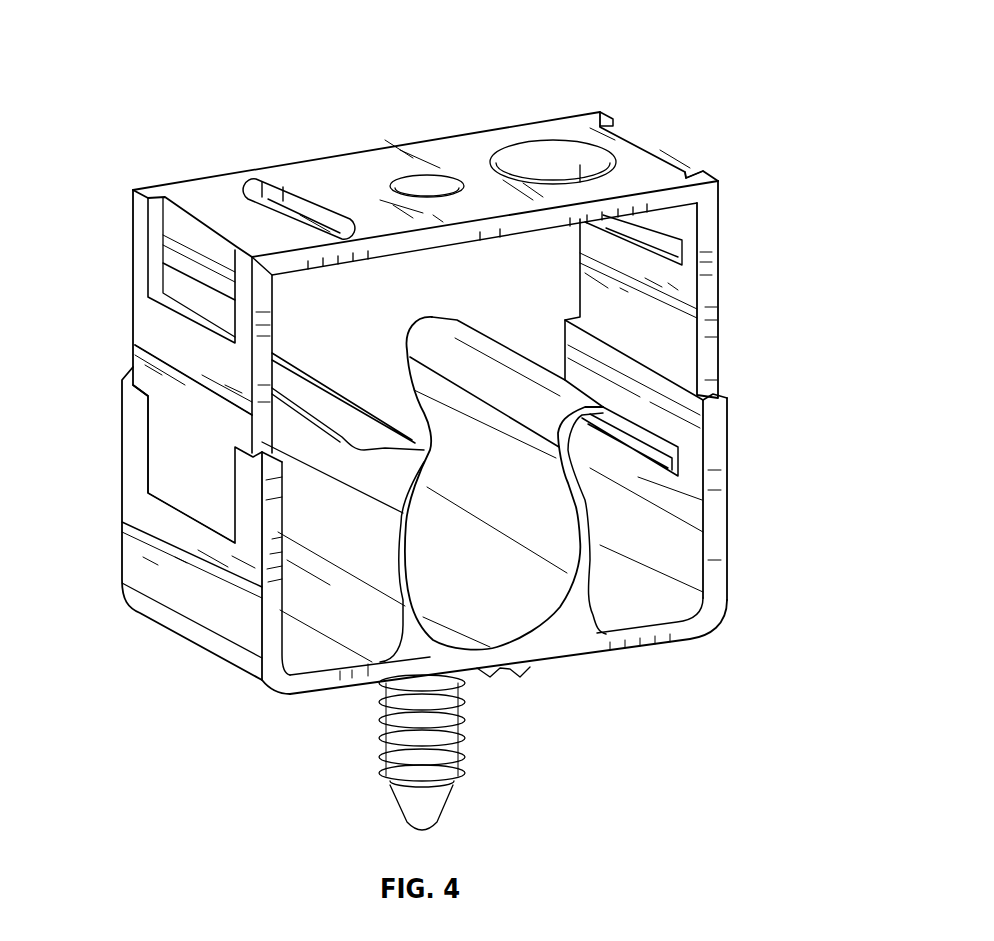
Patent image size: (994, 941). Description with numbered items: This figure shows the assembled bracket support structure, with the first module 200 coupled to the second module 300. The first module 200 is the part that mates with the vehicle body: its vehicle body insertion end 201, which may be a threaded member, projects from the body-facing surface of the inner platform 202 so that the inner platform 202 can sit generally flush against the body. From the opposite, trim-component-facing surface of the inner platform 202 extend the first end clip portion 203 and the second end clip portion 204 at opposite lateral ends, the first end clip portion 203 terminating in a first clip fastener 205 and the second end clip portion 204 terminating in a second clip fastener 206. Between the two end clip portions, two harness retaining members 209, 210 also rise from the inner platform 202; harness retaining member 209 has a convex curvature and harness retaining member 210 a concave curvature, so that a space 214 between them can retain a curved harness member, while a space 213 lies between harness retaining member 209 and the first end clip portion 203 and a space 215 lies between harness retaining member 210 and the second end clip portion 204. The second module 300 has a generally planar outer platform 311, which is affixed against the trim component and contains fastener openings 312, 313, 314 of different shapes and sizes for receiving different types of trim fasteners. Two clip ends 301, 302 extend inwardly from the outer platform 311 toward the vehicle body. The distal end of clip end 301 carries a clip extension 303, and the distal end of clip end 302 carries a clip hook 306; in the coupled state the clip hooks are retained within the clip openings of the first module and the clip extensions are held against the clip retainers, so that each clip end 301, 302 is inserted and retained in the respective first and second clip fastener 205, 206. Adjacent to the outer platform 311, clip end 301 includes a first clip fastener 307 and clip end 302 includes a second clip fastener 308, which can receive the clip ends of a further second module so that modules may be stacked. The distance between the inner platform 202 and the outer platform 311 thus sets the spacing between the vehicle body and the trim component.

The first module 200 is at (437, 505).
The vehicle body insertion end 201 is at (460, 716).
The inner platform 202 is at (600, 652).
The first end clip portion 203 is at (182, 602).
The second end clip portion 204 is at (729, 560).
The first clip fastener 205 is at (143, 480).
The second clip fastener 206 is at (730, 420).
The harness retaining member 209 is at (347, 548).
The harness retaining member 210 is at (440, 420).
The space 213 is at (362, 616).
The space 214 is at (482, 588).
The space 215 is at (672, 542).
The second module 300 is at (423, 256).
The clip end 301 is at (131, 367).
The clip end 302 is at (720, 243).
The clip extension 303 is at (166, 434).
The clip hook 306 is at (640, 448).
The first clip fastener 307 is at (130, 221).
The second clip fastener 308 is at (684, 154).
The outer platform 311 is at (512, 124).
The fastener opening 312 is at (296, 203).
The fastener opening 313 is at (424, 186).
The fastener opening 314 is at (571, 176).